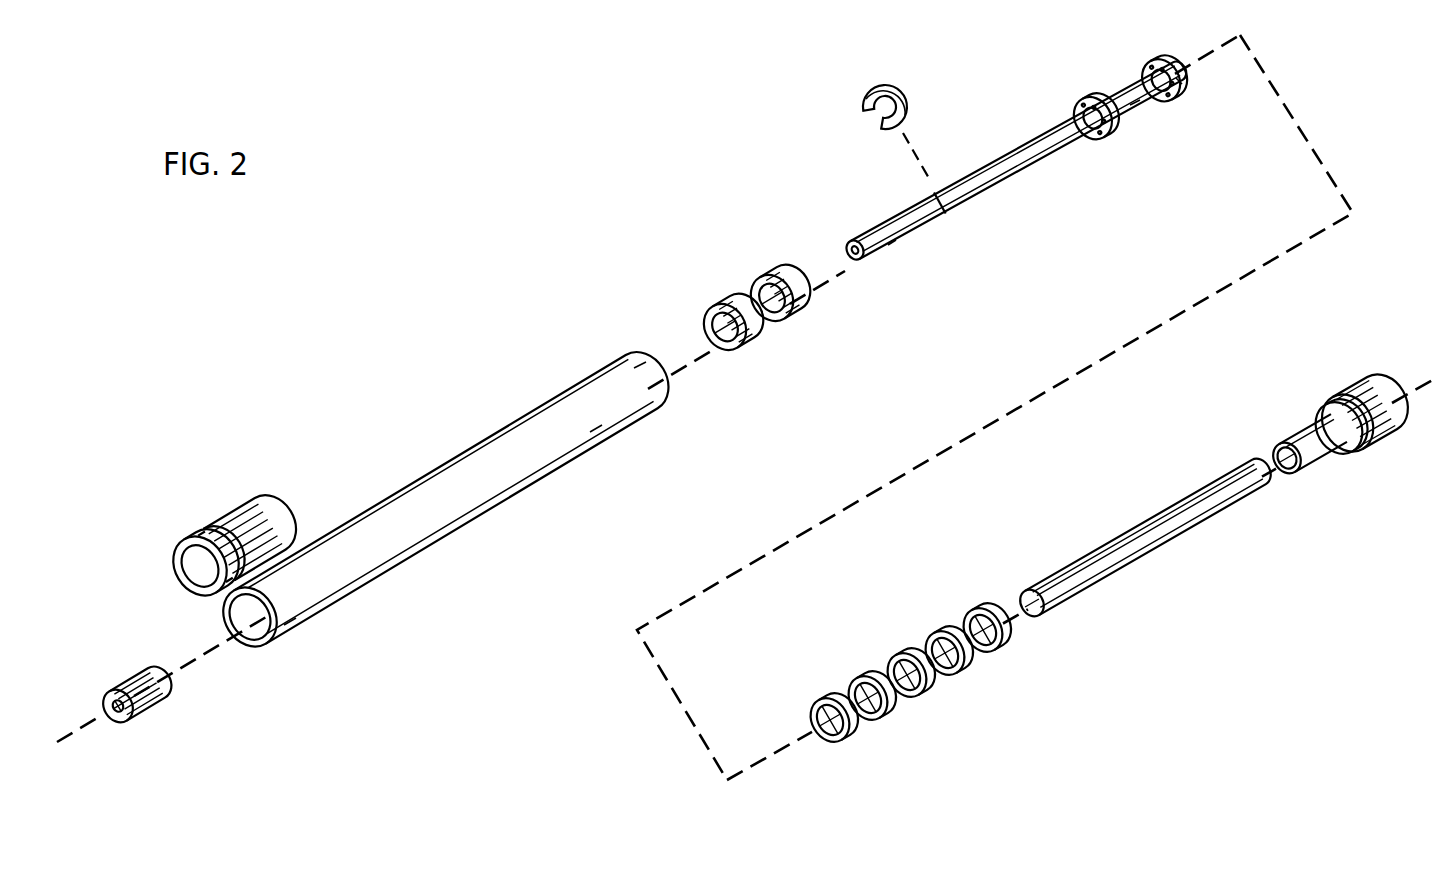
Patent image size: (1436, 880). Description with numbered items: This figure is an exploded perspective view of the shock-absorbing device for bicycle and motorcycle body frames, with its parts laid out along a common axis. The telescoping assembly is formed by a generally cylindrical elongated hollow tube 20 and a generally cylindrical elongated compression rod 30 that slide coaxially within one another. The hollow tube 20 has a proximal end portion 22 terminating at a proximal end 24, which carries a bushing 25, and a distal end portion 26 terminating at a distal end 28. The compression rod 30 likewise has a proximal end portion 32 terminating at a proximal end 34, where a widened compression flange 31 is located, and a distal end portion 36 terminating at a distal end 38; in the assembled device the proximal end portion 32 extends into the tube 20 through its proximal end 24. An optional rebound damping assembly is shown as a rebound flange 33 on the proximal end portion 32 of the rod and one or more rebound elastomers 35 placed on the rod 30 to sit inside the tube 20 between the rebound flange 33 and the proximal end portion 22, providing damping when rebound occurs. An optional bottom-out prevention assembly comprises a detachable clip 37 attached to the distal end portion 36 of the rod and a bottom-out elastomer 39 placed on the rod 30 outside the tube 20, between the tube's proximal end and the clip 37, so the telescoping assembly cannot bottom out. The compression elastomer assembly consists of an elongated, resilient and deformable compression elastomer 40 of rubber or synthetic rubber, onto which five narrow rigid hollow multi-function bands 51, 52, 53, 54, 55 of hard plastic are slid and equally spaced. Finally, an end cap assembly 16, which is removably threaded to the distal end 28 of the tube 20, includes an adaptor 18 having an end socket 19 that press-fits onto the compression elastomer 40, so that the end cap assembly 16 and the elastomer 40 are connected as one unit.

The end cap assembly 16 is at (1337, 382).
The adaptor 18 is at (1328, 450).
The end socket 19 is at (1284, 478).
The hollow tube 20 is at (374, 508).
The proximal end portion 22 is at (290, 622).
The proximal end 24 is at (253, 648).
The bushing 25 is at (186, 548).
The distal end portion 26 is at (597, 435).
The distal end 28 is at (641, 360).
The compression rod 30 is at (994, 163).
The compression flange 31 is at (1182, 84).
The proximal end portion 32 is at (1138, 106).
The rebound flange 33 is at (1074, 112).
The proximal end 34 is at (1142, 72).
The rebound elastomers 35 is at (793, 322).
The distal end portion 36 is at (893, 240).
The detachable clip 37 is at (863, 104).
The distal end 38 is at (848, 243).
The bottom-out elastomer 39 is at (126, 688).
The compression elastomer 40 is at (1118, 540).
The multi-function band 51 is at (968, 615).
The multi-function band 52 is at (930, 638).
The multi-function band 53 is at (891, 661).
The multi-function band 54 is at (852, 683).
The multi-function band 55 is at (806, 706).